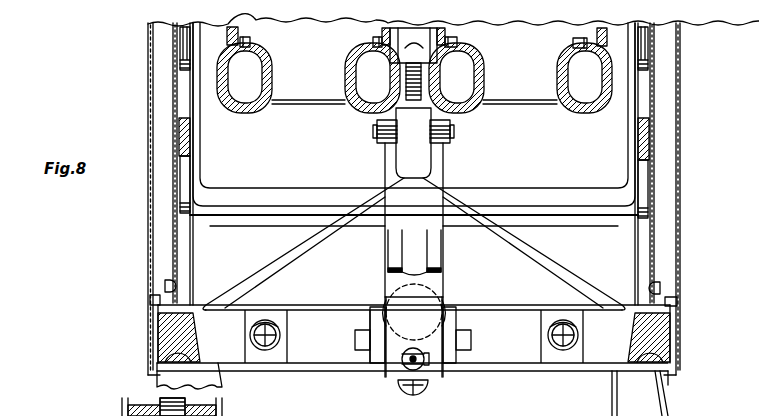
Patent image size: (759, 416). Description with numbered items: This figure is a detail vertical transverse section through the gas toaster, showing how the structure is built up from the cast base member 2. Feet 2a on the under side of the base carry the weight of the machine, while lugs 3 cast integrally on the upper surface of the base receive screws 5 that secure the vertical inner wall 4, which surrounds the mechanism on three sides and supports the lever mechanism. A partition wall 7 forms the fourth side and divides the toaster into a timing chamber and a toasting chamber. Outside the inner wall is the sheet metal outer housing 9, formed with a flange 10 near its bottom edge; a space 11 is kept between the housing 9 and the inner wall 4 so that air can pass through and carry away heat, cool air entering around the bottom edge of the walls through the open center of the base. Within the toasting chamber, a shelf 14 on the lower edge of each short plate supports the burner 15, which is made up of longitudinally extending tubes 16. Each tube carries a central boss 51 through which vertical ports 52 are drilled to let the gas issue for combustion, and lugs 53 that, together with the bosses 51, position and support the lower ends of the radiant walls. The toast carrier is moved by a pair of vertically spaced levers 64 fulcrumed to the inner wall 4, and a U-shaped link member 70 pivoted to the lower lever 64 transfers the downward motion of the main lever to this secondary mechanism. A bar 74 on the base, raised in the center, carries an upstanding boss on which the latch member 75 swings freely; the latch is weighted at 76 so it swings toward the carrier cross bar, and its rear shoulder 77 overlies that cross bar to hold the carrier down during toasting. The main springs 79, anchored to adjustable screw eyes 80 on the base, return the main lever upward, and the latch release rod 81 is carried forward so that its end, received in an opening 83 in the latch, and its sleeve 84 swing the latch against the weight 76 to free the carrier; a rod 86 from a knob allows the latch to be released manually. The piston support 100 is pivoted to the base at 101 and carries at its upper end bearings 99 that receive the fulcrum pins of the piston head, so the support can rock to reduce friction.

The base member 2 is at (660, 348).
The feet 2a is at (210, 378).
The lugs 3 is at (193, 273).
The inner wall 4 is at (178, 243).
The screws 5 is at (165, 284).
The partition wall 7 is at (414, 189).
The outer housing 9 is at (147, 228).
The flange 10 is at (151, 299).
The space 11 is at (153, 93).
The shelf 14 is at (299, 101).
The burner 15 is at (280, 75).
The tubes 16 is at (244, 106).
The boss 51 is at (250, 42).
The ports 52 is at (238, 30).
The lugs 53 is at (228, 33).
The levers 64 is at (180, 170).
The link member 70 is at (201, 167).
The bar 74 is at (526, 280).
The latch member 75 is at (393, 234).
The weight 76 is at (400, 290).
The shoulder 77 is at (441, 279).
The main springs 79 is at (281, 332).
The screw eyes 80 is at (278, 344).
The latch release rod 81 is at (421, 364).
The opening 83 is at (414, 337).
The sleeve 84 is at (407, 357).
The rod 86 is at (425, 395).
The bearings 99 is at (120, 414).
The piston support 100 is at (448, 322).
The pivot 101 is at (457, 341).